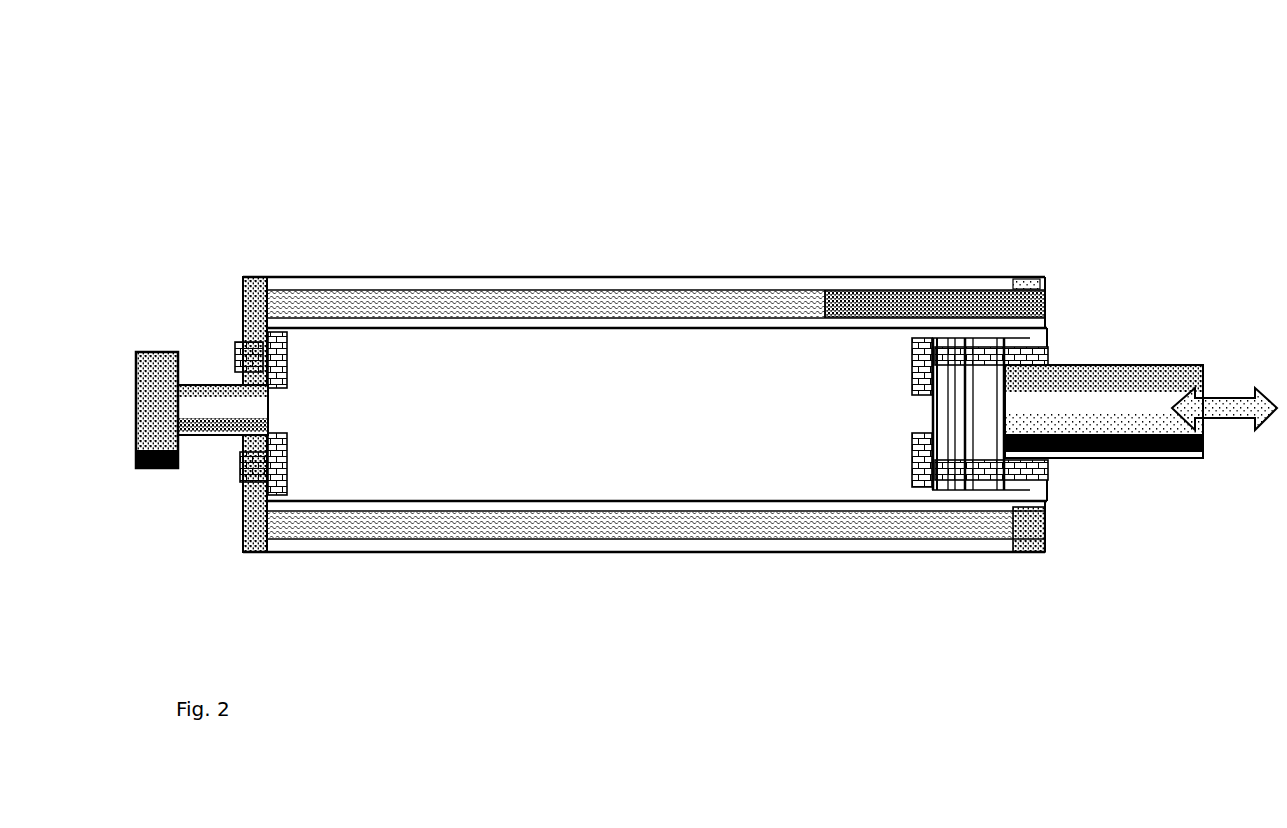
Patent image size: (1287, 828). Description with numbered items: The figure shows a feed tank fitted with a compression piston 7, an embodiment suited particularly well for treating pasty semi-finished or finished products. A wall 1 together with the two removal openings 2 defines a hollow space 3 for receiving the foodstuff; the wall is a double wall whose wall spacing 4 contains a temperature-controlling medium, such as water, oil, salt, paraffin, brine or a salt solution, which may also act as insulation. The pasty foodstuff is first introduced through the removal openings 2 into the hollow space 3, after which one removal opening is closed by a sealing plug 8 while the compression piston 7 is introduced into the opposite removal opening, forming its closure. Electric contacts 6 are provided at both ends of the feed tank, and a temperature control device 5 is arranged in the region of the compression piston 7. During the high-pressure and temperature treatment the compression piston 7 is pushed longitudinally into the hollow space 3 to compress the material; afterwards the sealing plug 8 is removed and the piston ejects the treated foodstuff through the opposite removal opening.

The wall 1 is at (412, 266).
The removal openings 2 is at (284, 423).
The hollow space 3 is at (577, 390).
The wall spacing 4 is at (503, 305).
The temperature control device 5 is at (977, 303).
The electric contacts 6 is at (1032, 355).
The compression piston 7 is at (1148, 402).
The sealing plug 8 is at (195, 398).